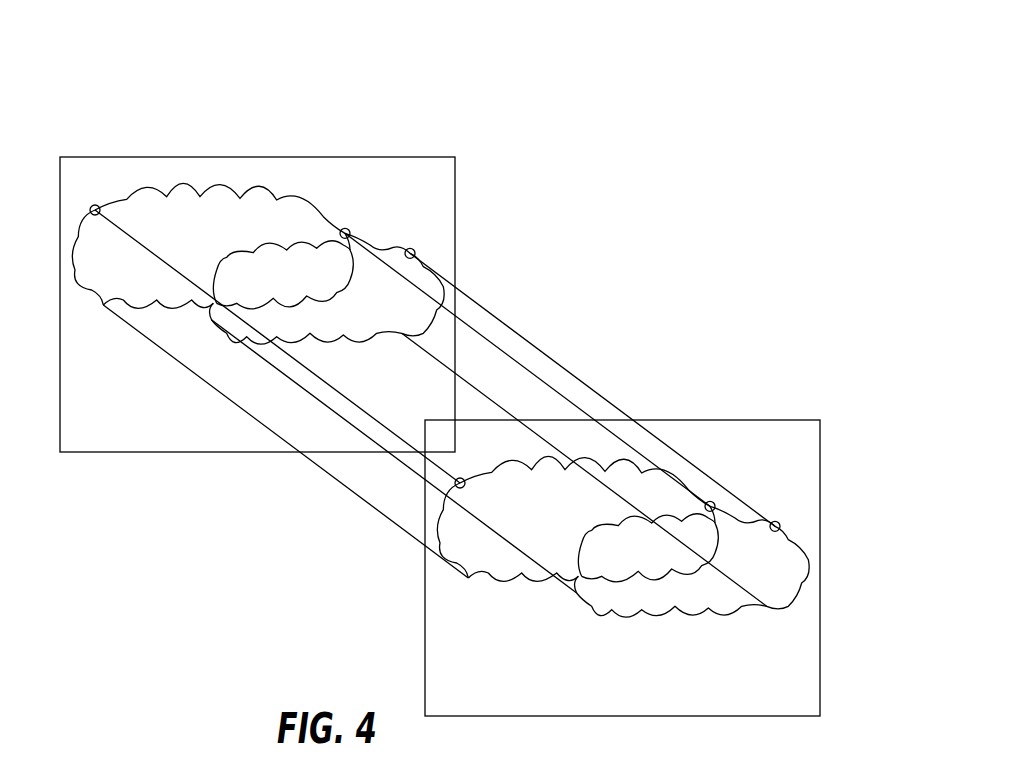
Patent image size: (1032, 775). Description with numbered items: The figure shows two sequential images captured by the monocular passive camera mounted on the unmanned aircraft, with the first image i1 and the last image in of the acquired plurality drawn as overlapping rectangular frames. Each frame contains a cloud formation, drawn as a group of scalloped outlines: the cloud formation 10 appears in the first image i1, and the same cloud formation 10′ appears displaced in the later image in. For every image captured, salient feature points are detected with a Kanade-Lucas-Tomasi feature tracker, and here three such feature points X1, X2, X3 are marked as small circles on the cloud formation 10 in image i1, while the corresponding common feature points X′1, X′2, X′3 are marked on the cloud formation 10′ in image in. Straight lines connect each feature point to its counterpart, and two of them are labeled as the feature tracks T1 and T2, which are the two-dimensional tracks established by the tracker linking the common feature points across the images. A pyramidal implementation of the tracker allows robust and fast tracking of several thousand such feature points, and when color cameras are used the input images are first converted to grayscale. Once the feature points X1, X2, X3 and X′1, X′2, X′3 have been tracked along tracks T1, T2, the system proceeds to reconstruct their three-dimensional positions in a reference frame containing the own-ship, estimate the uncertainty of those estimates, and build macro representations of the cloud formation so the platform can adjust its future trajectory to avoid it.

The cloud formation 10 is at (712, 732).
The cloud formation 10′ is at (198, 212).
The feature point X1 is at (852, 457).
The feature point X2 is at (710, 501).
The feature point X3 is at (460, 478).
The feature point X′1 is at (500, 162).
The feature point X′2 is at (423, 83).
The feature point X′3 is at (96, 204).
The feature track T1 is at (615, 302).
The feature track T2 is at (705, 293).
The image in is at (257, 285).
The image i1 is at (622, 548).